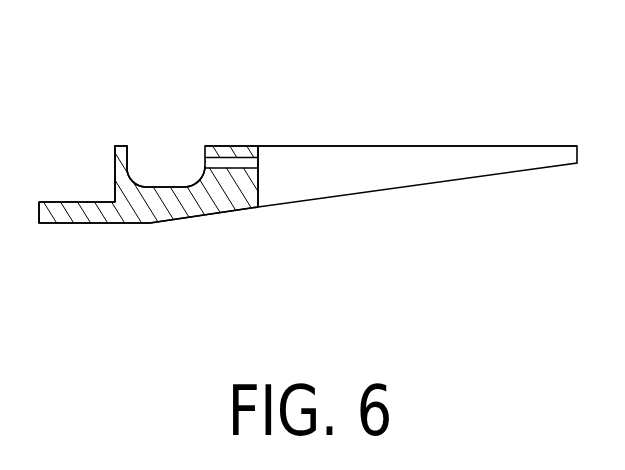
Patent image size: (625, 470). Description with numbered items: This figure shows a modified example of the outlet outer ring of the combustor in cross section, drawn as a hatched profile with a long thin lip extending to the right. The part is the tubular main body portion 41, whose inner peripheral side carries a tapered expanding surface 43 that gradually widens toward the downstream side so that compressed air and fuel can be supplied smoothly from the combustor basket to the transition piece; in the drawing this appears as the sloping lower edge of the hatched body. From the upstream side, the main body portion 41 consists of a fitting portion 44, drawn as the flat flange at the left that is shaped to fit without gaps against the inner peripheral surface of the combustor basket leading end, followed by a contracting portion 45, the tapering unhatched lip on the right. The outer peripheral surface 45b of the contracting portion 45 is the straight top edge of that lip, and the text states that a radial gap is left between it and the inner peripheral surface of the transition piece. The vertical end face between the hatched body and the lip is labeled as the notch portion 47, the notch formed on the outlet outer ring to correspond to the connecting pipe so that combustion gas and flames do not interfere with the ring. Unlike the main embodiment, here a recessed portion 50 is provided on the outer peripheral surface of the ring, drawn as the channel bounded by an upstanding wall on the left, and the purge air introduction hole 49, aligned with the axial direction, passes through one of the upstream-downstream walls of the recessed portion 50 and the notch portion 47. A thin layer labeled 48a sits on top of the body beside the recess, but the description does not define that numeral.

The main body portion 41 is at (240, 208).
The expanding surface 43 is at (185, 222).
The fitting portion 44 is at (70, 224).
The contracting portion 45 is at (502, 175).
The outer peripheral surface of the contracting portion 45b is at (503, 146).
The notch portion 47 is at (258, 183).
The attachment layer 48a is at (228, 146).
The purge air introduction hole 49 is at (202, 166).
The recessed portion 50 is at (128, 157).